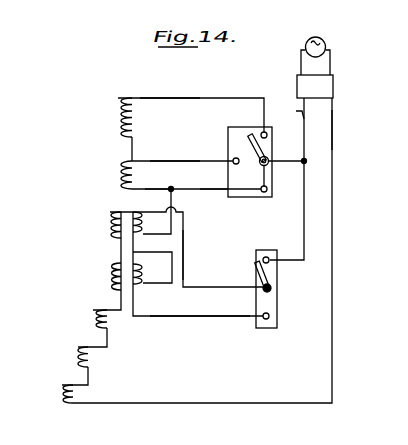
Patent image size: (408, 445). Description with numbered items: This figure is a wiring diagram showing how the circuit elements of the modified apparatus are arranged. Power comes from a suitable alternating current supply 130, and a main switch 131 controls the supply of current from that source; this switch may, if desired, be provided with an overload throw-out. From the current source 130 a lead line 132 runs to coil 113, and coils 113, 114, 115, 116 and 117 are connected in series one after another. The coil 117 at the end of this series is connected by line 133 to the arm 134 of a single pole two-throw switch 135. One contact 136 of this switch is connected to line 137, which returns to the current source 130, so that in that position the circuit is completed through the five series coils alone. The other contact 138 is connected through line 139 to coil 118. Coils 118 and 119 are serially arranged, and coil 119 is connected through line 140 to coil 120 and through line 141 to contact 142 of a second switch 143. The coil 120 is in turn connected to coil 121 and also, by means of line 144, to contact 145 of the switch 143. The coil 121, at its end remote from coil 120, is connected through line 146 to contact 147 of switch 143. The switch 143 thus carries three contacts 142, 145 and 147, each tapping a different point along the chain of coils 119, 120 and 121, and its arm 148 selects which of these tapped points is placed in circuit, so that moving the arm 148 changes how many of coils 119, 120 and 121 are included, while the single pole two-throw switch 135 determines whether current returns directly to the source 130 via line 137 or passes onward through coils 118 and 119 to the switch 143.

The coil 113 is at (45, 394).
The coil 114 is at (62, 357).
The coil 115 is at (75, 320).
The coil 116 is at (97, 278).
The coil 117 is at (99, 224).
The coil 118 is at (142, 278).
The coil 119 is at (141, 218).
The coil 120 is at (104, 174).
The coil 121 is at (118, 118).
The alternating current supply 130 is at (315, 36).
The main switch 131 is at (297, 85).
The lead line 132 is at (333, 131).
The line 133 is at (185, 258).
The arm 134 is at (278, 279).
The single pole two-throw switch 135 is at (278, 307).
The contact 136 is at (268, 256).
The line 137 is at (288, 114).
The contact 138 is at (264, 336).
The line 139 is at (195, 320).
The line 140 is at (153, 188).
The line 141 is at (229, 192).
The contact 142 is at (264, 193).
The switch 143 is at (271, 176).
The line 144 is at (158, 160).
The contact 145 is at (218, 150).
The line 146 is at (163, 96).
The contact 147 is at (261, 131).
The switch arm 148 is at (269, 144).